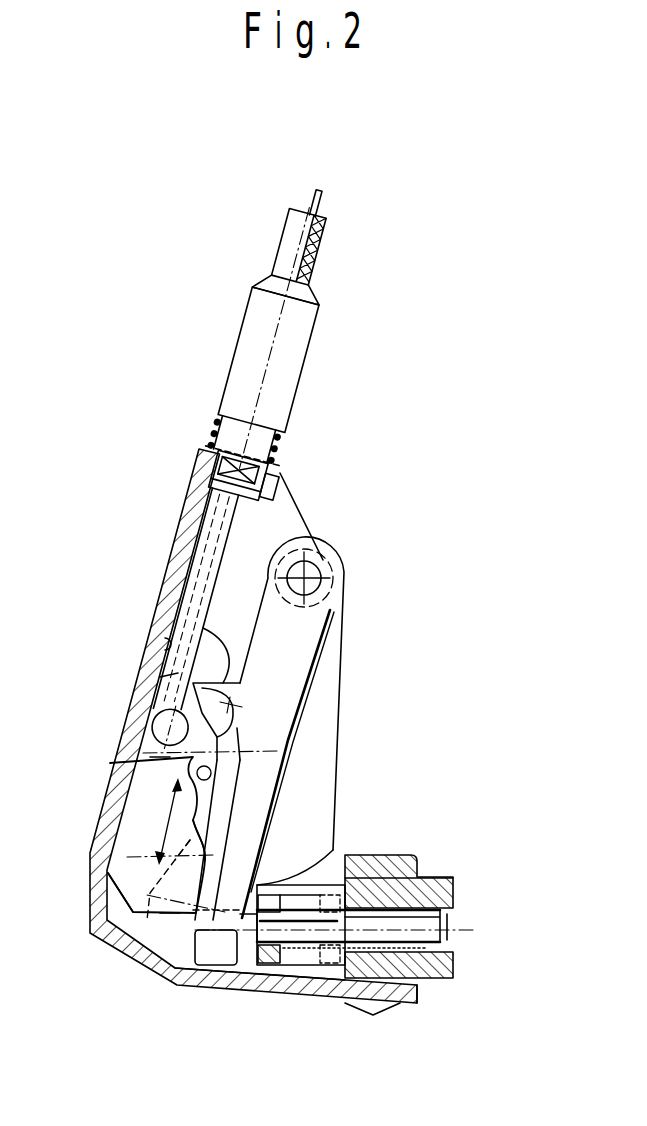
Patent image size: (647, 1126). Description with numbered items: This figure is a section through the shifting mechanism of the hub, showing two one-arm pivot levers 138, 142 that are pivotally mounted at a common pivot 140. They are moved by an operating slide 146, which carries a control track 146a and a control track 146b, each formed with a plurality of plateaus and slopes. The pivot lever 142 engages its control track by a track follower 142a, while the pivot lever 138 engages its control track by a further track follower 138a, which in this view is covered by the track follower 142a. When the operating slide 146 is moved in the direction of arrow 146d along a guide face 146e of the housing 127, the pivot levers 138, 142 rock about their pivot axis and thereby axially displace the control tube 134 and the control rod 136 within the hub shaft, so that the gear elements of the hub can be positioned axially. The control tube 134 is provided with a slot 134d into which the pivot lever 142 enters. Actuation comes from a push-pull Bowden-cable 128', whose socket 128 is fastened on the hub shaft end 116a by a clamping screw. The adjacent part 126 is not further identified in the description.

The push-pull Bowden-cable 128' is at (353, 234).
The track follower 138a is at (228, 645).
The pivot 140 is at (322, 562).
The track follower 142a is at (230, 690).
The guide face 146e is at (165, 644).
The pivot lever 142 is at (277, 693).
The control track 146a is at (150, 777).
The control track 146b is at (240, 772).
The operating slide 146 is at (150, 805).
The pivot lever 138 is at (318, 806).
The arrow 146d is at (155, 825).
The slot 134d is at (322, 893).
The socket 128 is at (417, 883).
The control rod 136 is at (447, 943).
The hub shaft end 116a is at (442, 980).
The housing 126 is at (227, 996).
The housing 127 is at (270, 997).
The control tube 134 is at (307, 996).